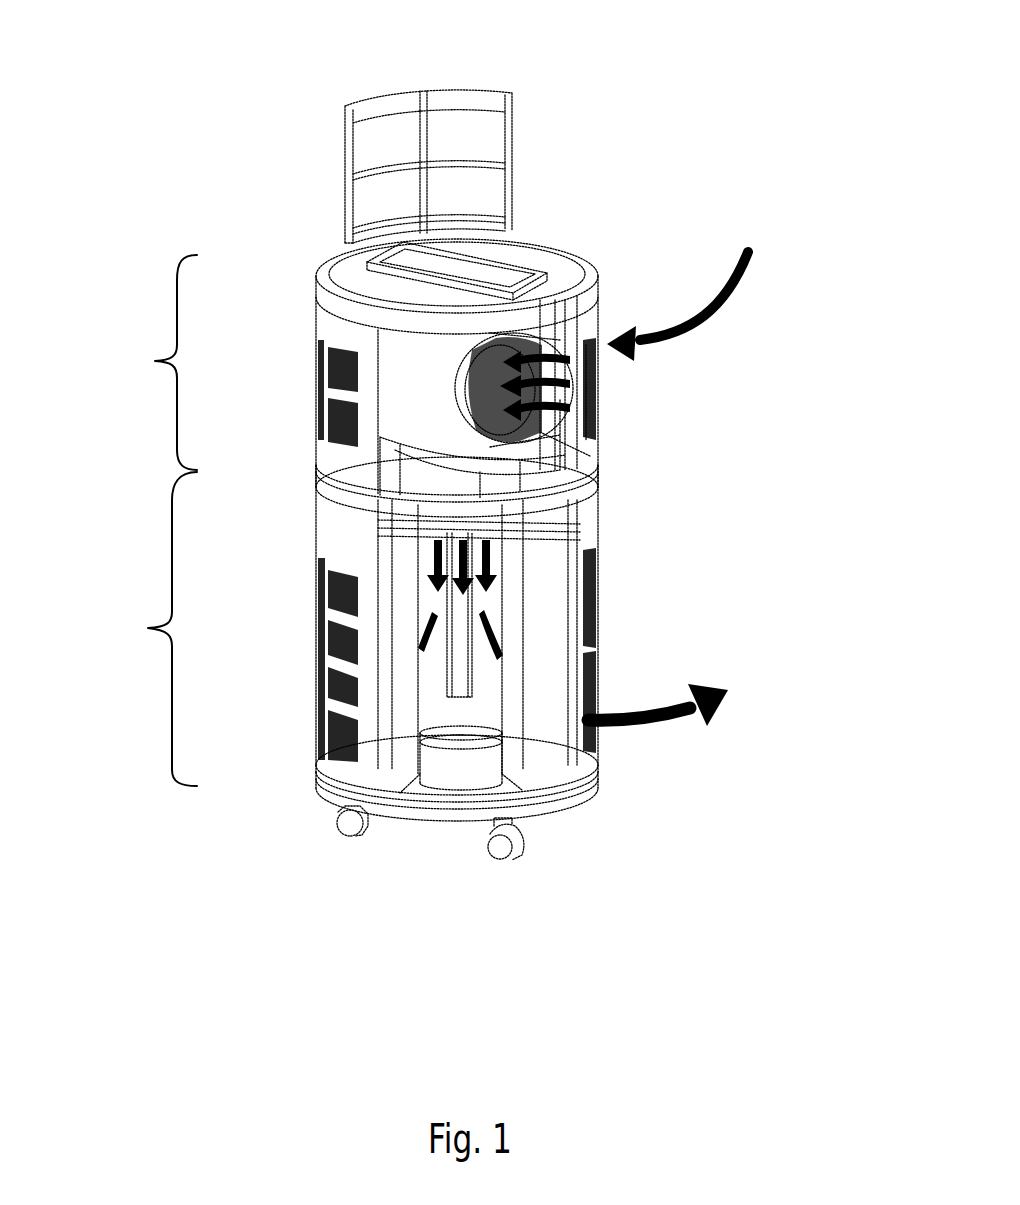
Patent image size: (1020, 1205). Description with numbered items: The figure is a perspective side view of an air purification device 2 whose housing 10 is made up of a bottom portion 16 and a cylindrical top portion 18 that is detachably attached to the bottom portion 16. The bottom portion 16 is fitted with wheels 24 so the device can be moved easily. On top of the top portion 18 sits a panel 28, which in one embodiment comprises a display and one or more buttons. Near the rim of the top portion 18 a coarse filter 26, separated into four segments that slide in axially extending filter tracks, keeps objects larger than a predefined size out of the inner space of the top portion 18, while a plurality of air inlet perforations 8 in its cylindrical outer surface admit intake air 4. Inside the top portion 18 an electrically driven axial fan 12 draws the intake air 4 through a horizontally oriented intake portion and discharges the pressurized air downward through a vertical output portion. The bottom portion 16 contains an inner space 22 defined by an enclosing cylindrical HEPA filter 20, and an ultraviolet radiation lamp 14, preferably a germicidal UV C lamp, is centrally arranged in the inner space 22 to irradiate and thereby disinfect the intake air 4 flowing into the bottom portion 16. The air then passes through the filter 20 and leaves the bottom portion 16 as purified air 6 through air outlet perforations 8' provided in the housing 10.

The air purification device 2 is at (196, 124).
The intake air 4 is at (718, 317).
The purified air 6 is at (665, 707).
The air inlet perforations 8 is at (648, 392).
The air outlet perforations 8' is at (648, 661).
The housing 10 is at (597, 495).
The fan 12 is at (417, 387).
The ultraviolet radiation lamp 14 is at (450, 600).
The bottom portion 16 is at (148, 629).
The top portion 18 is at (155, 362).
The filter 20 is at (538, 765).
The inner space 22 is at (445, 722).
The wheels 24 is at (500, 862).
The coarse filter 26 is at (370, 192).
The panel 28 is at (484, 270).